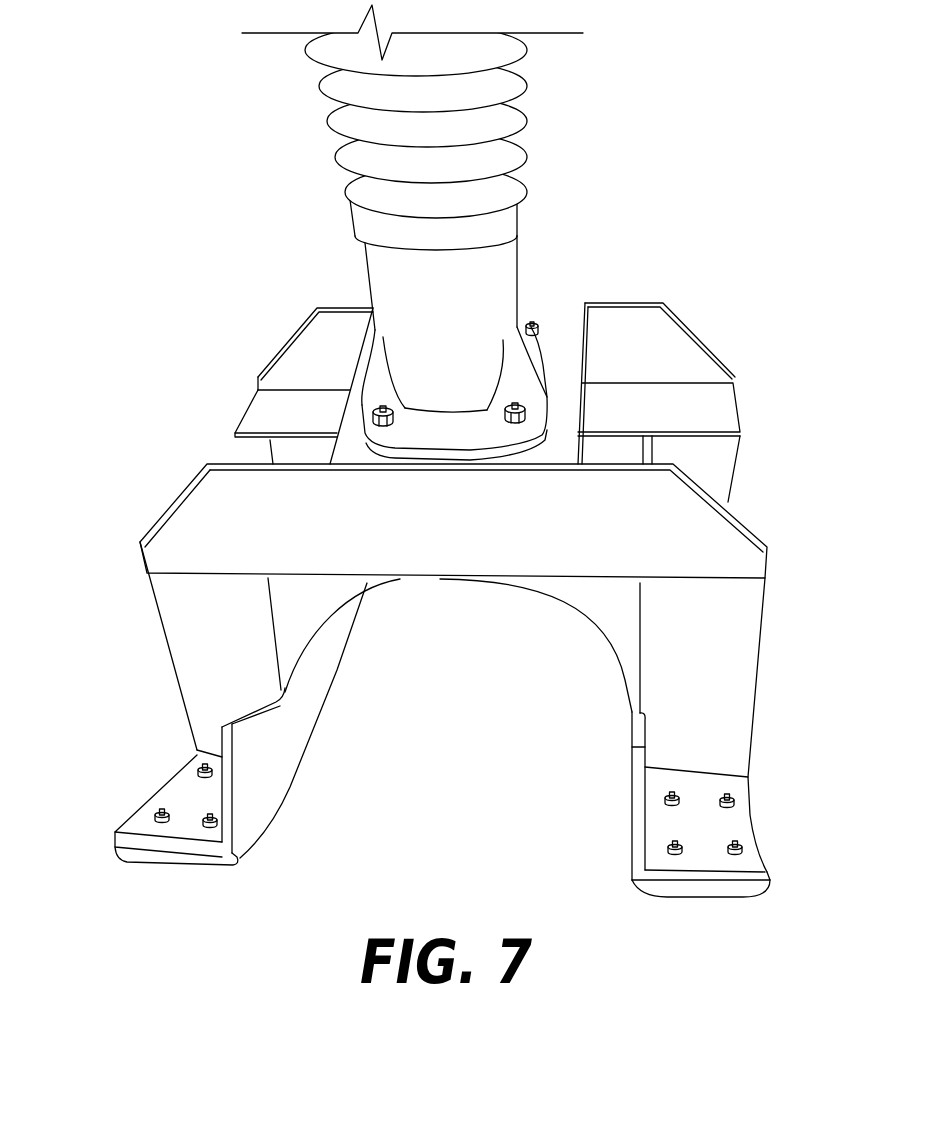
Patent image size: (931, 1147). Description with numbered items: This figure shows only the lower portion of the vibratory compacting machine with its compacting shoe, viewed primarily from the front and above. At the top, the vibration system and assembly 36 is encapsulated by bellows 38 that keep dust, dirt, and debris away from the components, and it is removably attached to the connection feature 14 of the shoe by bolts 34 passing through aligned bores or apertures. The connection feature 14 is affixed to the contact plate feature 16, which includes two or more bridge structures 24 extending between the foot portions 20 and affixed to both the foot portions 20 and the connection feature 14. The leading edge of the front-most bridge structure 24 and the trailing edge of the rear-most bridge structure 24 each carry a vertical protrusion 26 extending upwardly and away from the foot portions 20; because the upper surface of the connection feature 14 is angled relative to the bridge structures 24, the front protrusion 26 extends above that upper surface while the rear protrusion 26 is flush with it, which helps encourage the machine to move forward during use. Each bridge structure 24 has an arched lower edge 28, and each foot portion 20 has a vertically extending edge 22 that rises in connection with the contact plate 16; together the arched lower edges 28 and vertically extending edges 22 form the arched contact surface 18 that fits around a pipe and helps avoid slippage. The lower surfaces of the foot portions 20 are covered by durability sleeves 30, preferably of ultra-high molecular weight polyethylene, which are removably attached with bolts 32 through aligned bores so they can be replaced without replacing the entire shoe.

The connection feature 14 is at (563, 298).
The contact plate feature 16 is at (147, 573).
The arched contact surface 18 is at (333, 615).
The foot portion 20 is at (747, 832).
The vertically extending edge 22 is at (287, 750).
The bridge structure 24 is at (737, 408).
The vertical protrusion 26 is at (707, 344).
The arched lower edge 28 is at (603, 603).
The durability sleeve 30 is at (247, 857).
The bolt 32 is at (167, 812).
The bolt 34 is at (385, 408).
The vibration system and assembly 36 is at (313, 231).
The bellows 38 is at (531, 115).